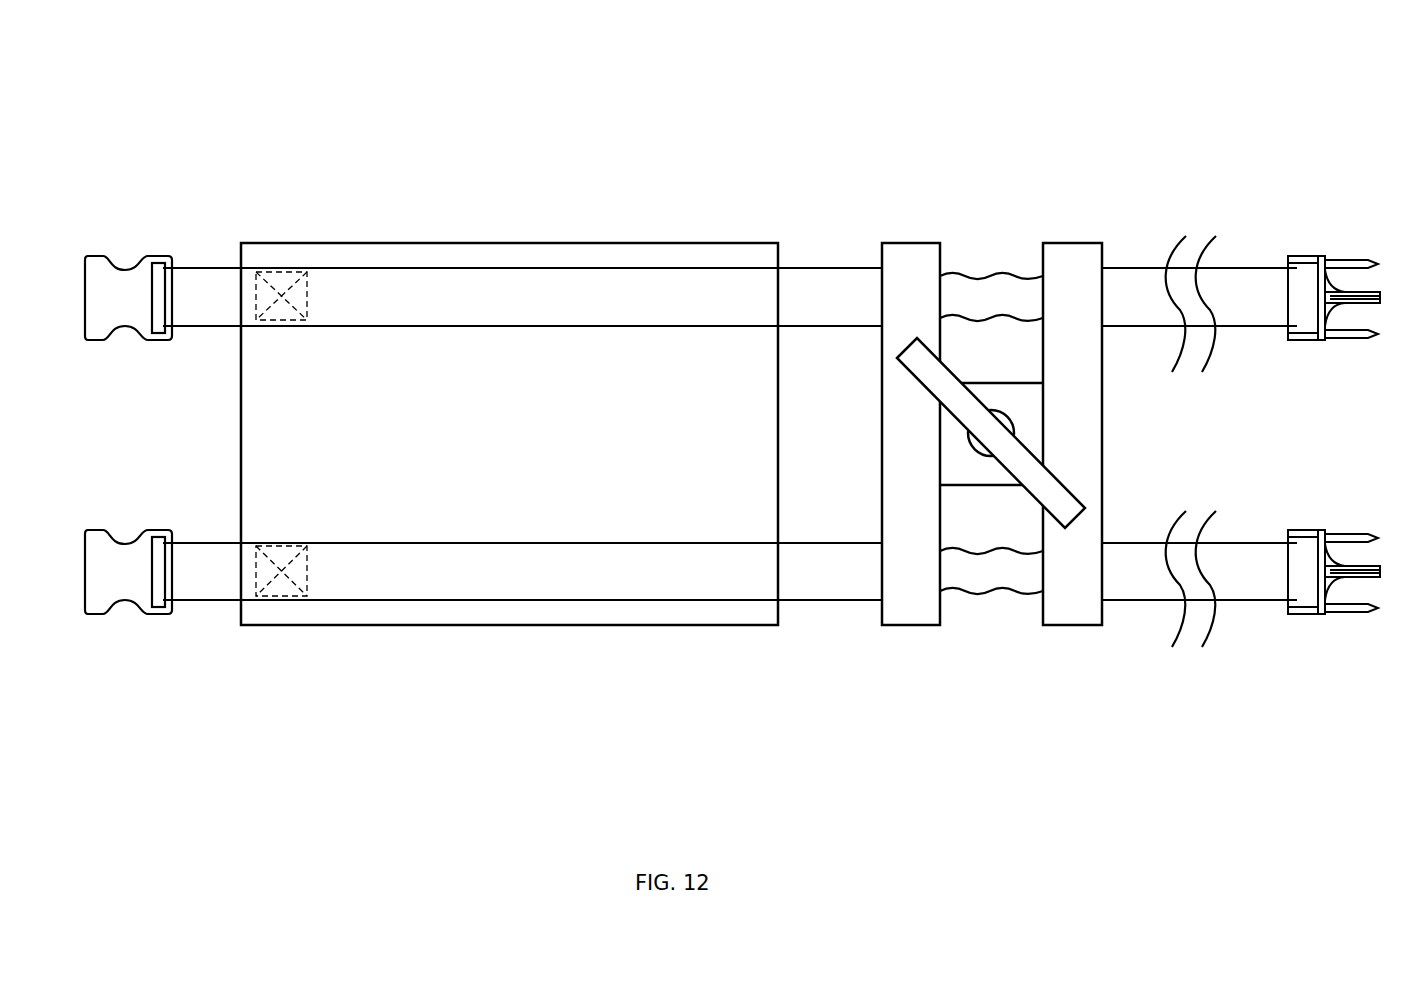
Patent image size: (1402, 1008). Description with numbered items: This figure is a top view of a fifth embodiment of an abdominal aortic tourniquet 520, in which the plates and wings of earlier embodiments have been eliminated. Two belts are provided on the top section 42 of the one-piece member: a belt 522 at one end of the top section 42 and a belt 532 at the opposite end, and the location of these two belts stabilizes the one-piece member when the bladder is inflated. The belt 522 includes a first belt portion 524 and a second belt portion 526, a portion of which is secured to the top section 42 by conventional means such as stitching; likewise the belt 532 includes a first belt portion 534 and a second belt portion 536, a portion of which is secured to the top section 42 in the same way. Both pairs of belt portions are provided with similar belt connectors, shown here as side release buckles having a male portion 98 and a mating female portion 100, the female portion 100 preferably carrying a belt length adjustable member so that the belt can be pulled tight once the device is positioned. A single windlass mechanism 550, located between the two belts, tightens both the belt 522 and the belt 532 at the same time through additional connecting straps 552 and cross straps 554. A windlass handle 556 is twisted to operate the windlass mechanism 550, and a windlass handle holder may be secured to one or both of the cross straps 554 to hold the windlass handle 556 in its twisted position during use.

The top section 42 is at (540, 436).
The male portion 98 is at (1356, 230).
The female portion 100 is at (124, 222).
The abdominal aortic tourniquet 520 is at (1096, 98).
The belt 522 is at (835, 243).
The first belt portion 524 is at (1243, 285).
The second belt portion 526 is at (527, 309).
The belt 532 is at (833, 623).
The first belt portion 534 is at (1243, 583).
The second belt portion 536 is at (530, 584).
The windlass mechanism 550 is at (1144, 455).
The connecting straps 552 is at (993, 298).
The cross straps 554 is at (903, 417).
The windlass handle 556 is at (1069, 513).